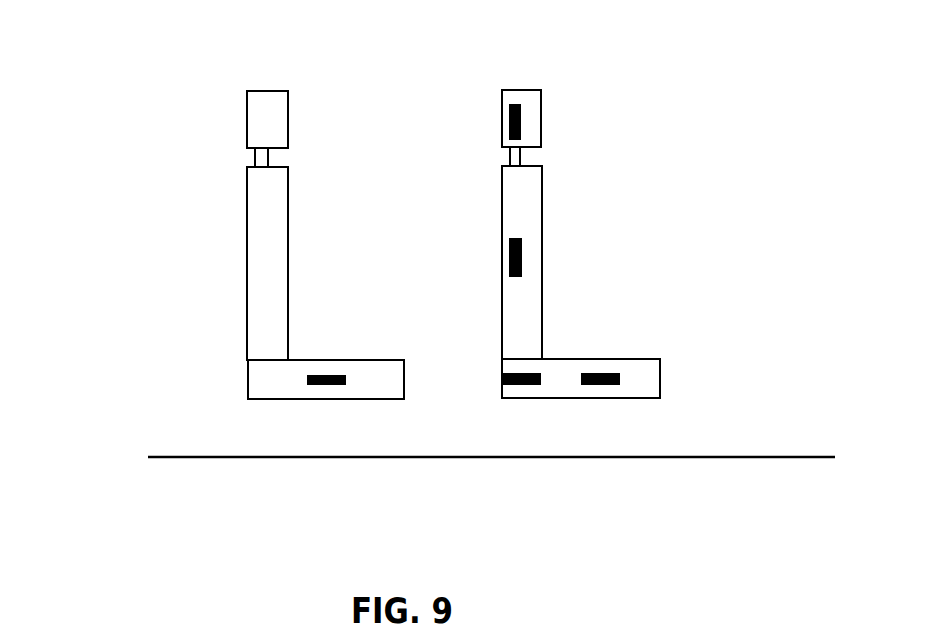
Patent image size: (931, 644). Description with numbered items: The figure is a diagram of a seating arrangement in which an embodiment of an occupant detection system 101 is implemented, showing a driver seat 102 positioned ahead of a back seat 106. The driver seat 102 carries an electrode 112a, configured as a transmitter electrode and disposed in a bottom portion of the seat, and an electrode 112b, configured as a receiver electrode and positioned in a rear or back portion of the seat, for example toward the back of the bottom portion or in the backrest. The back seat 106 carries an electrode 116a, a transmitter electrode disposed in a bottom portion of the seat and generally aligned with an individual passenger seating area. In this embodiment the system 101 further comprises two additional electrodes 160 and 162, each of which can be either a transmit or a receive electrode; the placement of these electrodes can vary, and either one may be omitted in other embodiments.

The occupant detection system 101 is at (122, 164).
The back seat 106 is at (247, 110).
The driver seat 102 is at (501, 107).
The electrode 160 is at (522, 118).
The electrode 162 is at (522, 248).
The electrode 116a is at (321, 387).
The electrode 112b is at (522, 385).
The electrode 112a is at (592, 387).